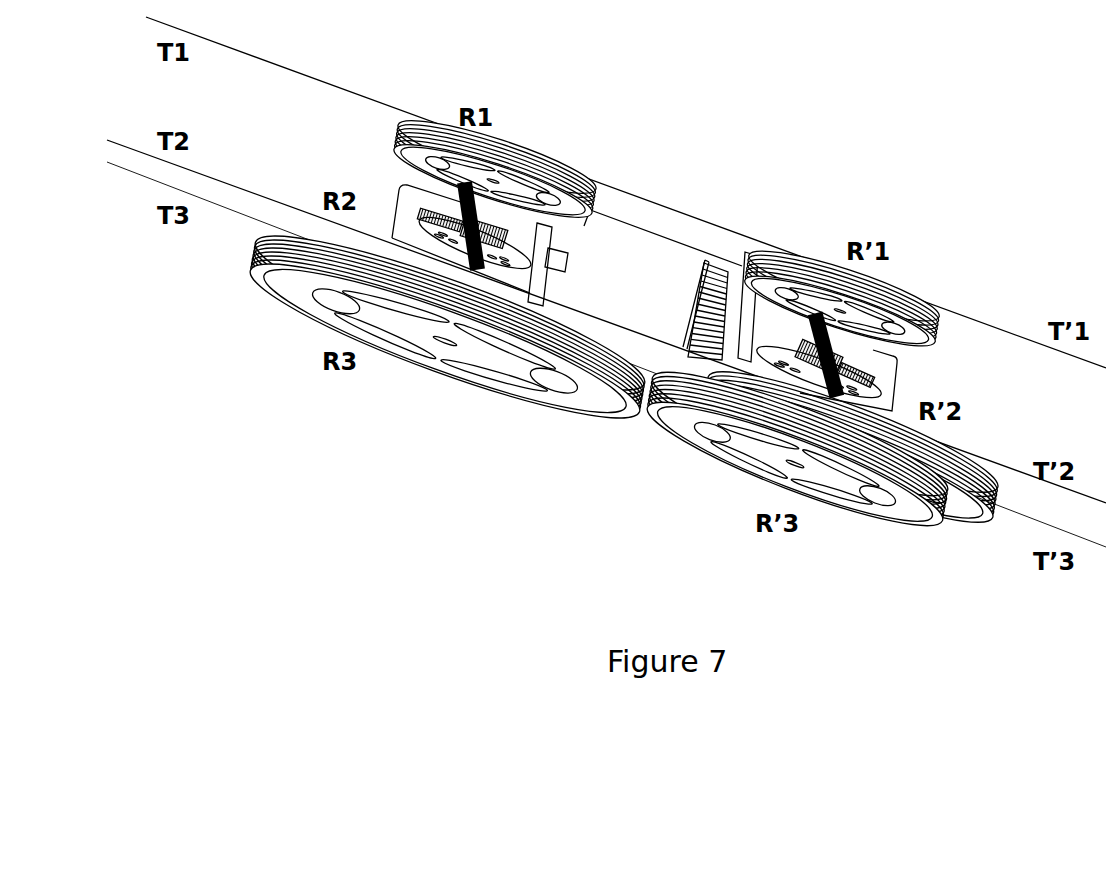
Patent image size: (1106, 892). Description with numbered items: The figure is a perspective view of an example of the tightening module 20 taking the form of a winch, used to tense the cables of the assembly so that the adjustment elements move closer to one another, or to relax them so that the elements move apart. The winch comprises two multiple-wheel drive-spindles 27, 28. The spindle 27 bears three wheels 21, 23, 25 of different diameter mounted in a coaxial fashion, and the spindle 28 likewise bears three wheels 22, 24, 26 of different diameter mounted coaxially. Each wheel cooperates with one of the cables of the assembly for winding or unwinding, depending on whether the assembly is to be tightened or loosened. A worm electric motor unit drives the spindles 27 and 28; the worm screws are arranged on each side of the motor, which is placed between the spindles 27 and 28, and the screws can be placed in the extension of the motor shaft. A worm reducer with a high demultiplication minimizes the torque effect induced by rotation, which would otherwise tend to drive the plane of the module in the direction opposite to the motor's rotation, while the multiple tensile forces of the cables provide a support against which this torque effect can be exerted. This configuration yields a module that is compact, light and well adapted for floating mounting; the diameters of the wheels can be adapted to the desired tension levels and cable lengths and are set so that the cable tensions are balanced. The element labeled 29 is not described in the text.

The tightening module 20 is at (625, 455).
The wheel 21 is at (508, 162).
The wheel 22 is at (885, 307).
The wheel 23 is at (517, 338).
The wheel 24 is at (767, 430).
The wheel 25 is at (530, 310).
The wheel 26 is at (742, 372).
The multiple-wheel drive-spindle 27 is at (530, 247).
The multiple-wheel drive-spindle 28 is at (693, 363).
The frame body 29 is at (653, 267).